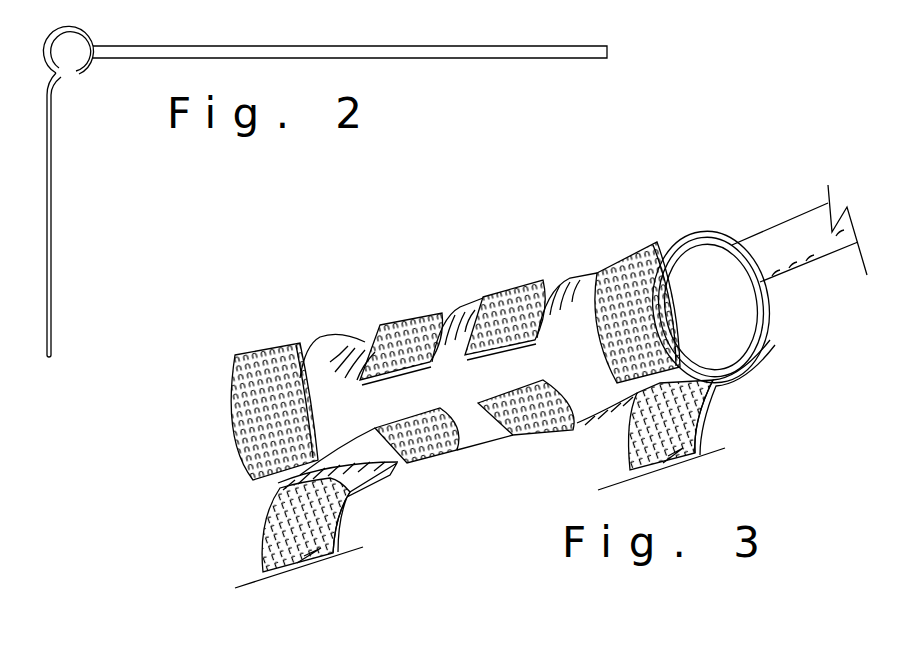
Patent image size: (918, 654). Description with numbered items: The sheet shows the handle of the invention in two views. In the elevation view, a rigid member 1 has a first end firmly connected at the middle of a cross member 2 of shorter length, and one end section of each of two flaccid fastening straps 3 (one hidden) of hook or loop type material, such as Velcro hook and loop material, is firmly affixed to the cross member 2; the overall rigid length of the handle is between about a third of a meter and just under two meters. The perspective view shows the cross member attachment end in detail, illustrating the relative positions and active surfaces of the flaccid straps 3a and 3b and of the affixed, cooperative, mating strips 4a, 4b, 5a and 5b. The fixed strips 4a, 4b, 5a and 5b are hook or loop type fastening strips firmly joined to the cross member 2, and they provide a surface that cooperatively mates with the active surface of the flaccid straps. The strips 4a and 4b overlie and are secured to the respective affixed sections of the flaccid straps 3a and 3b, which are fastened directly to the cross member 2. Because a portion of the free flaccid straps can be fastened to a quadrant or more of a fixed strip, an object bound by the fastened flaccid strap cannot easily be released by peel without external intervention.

In FIG. 2, the member 1 is at (562, 52).
In FIG. 3, the member 1 is at (798, 248).
In FIG. 2, the cross member 2 is at (62, 50).
In FIG. 3, the cross member 2 is at (275, 486).
In FIG. 2, the flaccid fastening straps 3 is at (50, 228).
In FIG. 3, the flaccid strap 3a is at (755, 418).
In FIG. 3, the flaccid strap 3b is at (262, 540).
In FIG. 3, the fixed strip 4a is at (630, 287).
In FIG. 3, the fixed strip 4b is at (268, 370).
In FIG. 3, the fixed strip 5a is at (522, 302).
In FIG. 3, the fixed strip 5b is at (413, 327).